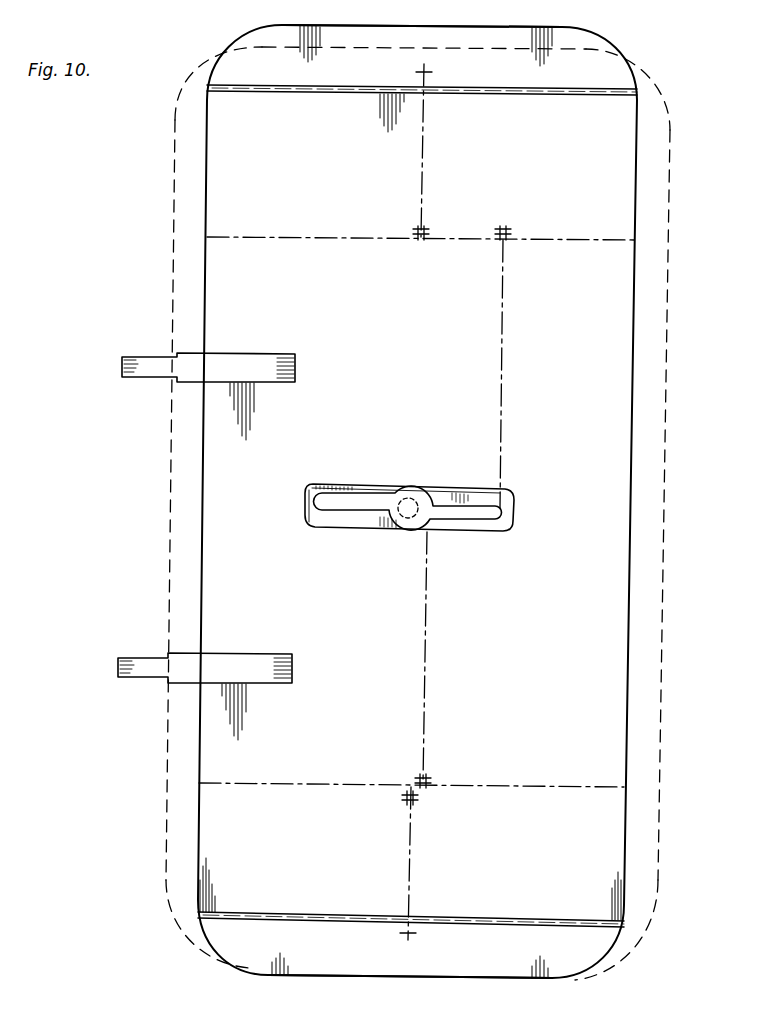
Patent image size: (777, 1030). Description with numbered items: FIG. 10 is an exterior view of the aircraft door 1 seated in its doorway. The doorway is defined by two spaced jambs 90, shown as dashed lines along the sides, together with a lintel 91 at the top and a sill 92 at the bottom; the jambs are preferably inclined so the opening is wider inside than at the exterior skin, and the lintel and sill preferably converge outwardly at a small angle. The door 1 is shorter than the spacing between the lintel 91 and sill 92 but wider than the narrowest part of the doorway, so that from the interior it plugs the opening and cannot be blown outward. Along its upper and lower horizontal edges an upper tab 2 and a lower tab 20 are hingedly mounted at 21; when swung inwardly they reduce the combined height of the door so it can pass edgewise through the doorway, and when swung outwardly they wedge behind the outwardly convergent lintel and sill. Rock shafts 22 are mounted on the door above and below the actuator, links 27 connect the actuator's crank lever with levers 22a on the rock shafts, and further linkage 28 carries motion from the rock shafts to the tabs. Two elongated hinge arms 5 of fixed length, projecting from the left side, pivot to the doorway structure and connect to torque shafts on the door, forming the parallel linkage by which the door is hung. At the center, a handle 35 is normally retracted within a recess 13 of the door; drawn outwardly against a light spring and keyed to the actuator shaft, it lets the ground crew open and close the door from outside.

The door 1 is at (642, 436).
The upper tab 2 is at (574, 36).
The hinge arm 5 is at (227, 373).
The recess 13 is at (358, 523).
The lower tab 20 is at (372, 962).
The hinge mounting 21 is at (502, 97).
The rock shaft 22 is at (336, 238).
The lever 22a is at (508, 237).
The link 27 is at (500, 344).
The linkage 28 is at (426, 164).
The handle 35 is at (379, 496).
The jamb 90 is at (172, 508).
The lintel 91 is at (387, 52).
The sill 92 is at (430, 975).